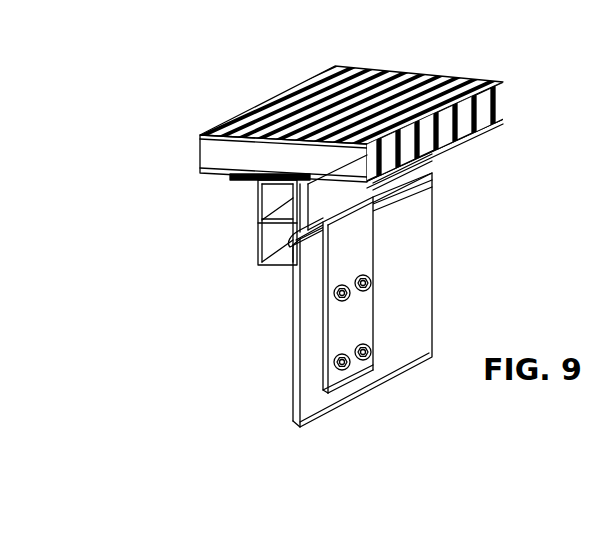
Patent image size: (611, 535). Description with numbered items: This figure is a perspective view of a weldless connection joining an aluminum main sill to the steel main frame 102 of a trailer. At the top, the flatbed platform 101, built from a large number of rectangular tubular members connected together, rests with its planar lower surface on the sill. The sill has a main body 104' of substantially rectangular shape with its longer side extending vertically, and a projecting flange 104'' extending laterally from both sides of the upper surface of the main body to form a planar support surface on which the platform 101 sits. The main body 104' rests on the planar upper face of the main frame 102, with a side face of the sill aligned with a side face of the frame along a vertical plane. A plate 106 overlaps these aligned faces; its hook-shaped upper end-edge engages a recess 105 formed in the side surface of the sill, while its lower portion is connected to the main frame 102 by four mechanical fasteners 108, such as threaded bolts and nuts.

The flatbed platform 101 is at (492, 82).
The main frame 102 is at (406, 333).
The main body 104' is at (248, 260).
The projecting flange 104'' is at (193, 230).
The recess 105 is at (291, 247).
The plate 106 is at (359, 260).
The mechanical fasteners 108 is at (351, 368).